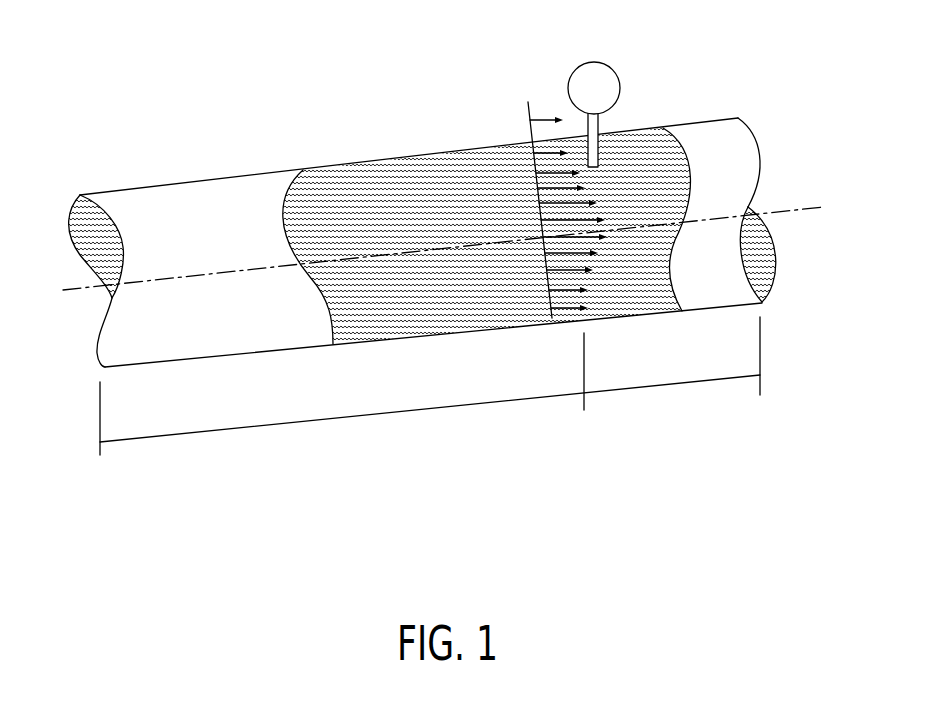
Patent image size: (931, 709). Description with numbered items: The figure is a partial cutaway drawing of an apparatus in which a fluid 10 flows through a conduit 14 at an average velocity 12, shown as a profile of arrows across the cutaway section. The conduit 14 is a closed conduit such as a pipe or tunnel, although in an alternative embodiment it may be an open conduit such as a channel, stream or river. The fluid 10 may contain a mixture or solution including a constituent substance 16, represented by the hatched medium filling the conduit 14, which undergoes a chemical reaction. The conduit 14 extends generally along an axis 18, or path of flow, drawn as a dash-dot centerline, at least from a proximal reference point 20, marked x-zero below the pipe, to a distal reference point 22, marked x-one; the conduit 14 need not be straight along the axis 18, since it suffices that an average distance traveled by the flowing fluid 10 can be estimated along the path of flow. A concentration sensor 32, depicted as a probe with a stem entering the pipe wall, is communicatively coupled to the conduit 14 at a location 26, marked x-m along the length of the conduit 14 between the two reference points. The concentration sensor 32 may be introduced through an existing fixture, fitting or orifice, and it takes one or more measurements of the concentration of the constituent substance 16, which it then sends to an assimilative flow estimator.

The fluid 10 is at (345, 180).
The average velocity 12 is at (540, 115).
The conduit 14 is at (212, 178).
The constituent substance 16 is at (431, 166).
The axis 18 is at (802, 208).
The proximal reference point 20 is at (94, 521).
The distal reference point 22 is at (764, 463).
The location 26 is at (586, 473).
The concentration sensor 32 is at (593, 62).